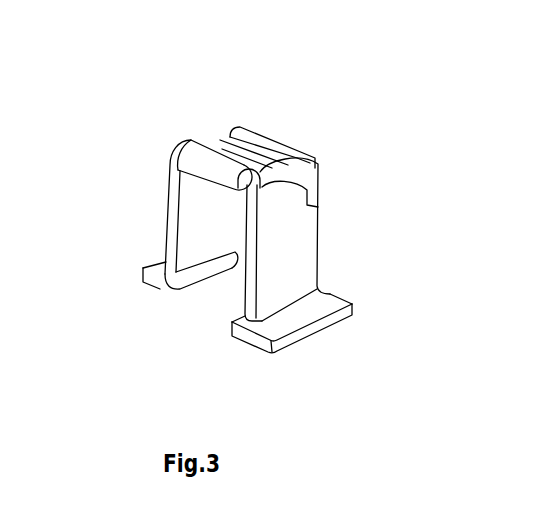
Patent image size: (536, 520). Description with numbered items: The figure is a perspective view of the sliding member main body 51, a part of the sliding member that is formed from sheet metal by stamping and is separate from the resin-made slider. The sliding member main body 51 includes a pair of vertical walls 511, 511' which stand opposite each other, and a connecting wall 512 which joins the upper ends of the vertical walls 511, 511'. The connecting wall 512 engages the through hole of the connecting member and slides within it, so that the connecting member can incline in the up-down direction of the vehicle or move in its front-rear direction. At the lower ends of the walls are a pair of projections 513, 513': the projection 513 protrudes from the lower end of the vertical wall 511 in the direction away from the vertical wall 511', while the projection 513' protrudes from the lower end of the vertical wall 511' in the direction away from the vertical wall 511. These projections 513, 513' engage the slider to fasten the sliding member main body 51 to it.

The sliding member main body 51 is at (456, 32).
The vertical wall 511 is at (161, 207).
The vertical wall 511' is at (323, 239).
The connecting wall 512 is at (253, 145).
The projection 513 is at (154, 299).
The projection 513' is at (320, 309).